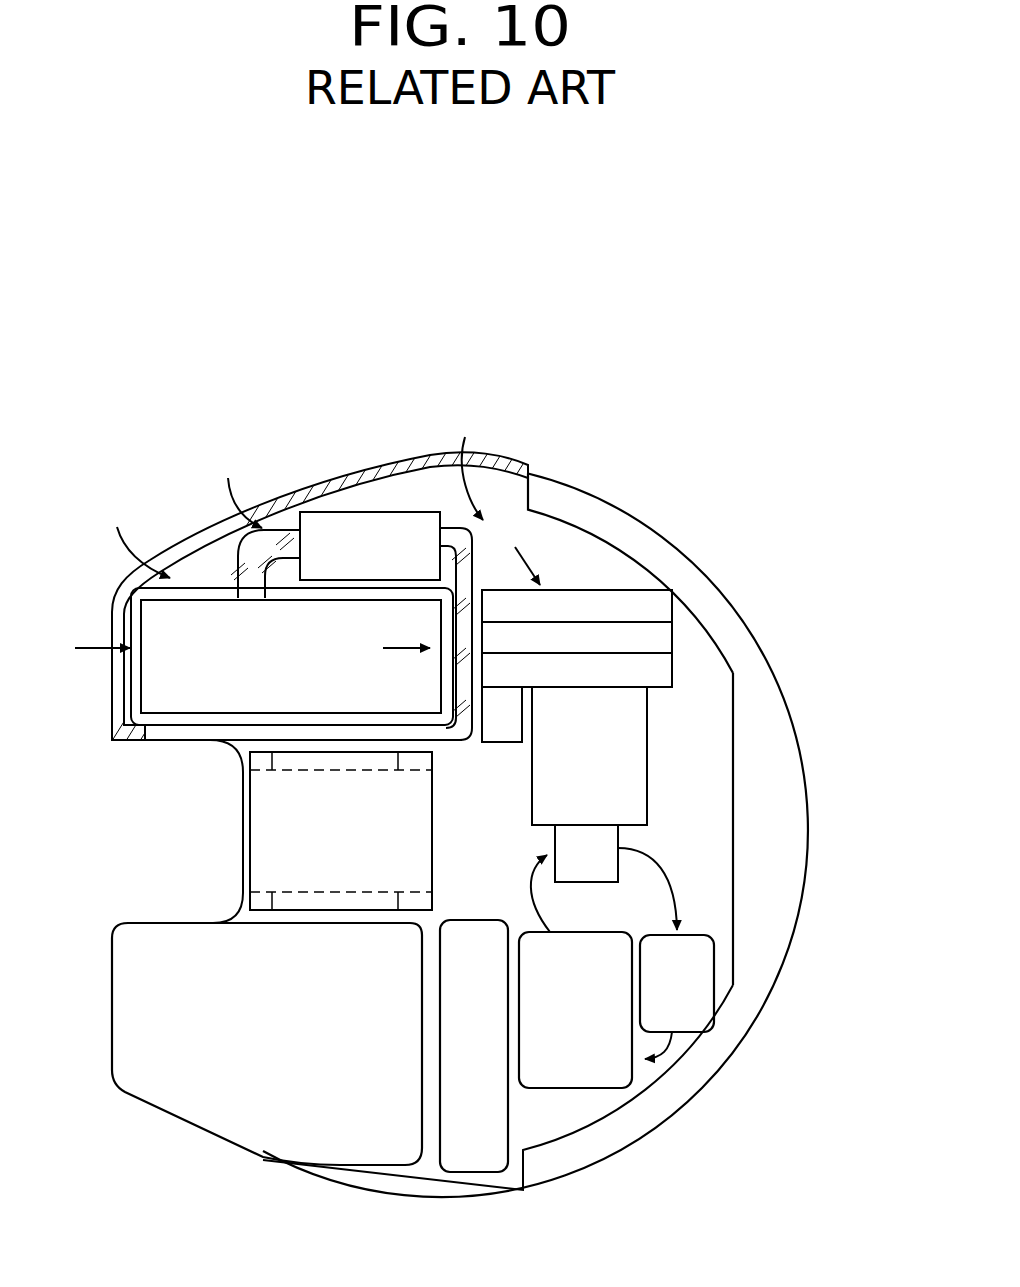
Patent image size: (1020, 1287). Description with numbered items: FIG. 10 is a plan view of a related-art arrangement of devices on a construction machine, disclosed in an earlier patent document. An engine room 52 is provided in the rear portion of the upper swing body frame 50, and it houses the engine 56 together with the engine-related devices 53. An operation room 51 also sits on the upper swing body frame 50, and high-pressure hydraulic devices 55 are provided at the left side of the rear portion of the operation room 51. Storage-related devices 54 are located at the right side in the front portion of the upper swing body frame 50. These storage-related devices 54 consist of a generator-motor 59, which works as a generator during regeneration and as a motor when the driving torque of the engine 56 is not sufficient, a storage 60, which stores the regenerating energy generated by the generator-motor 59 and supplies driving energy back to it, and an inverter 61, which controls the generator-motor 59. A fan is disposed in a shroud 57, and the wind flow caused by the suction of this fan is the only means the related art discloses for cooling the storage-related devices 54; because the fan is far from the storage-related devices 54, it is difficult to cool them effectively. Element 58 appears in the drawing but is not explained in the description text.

The upper swing body frame 50 is at (700, 838).
The operation room 51 is at (195, 1078).
The engine room 52 is at (697, 679).
The engine-related devices 53 is at (670, 775).
The storage-related devices 54 is at (302, 503).
The high-pressure hydraulic devices 55 is at (720, 960).
The engine 56 is at (570, 766).
The shroud 57 is at (660, 633).
The top plate 58 is at (663, 602).
The generator-motor 59 is at (505, 710).
The storage 60 is at (263, 678).
The inverter 61 is at (372, 540).